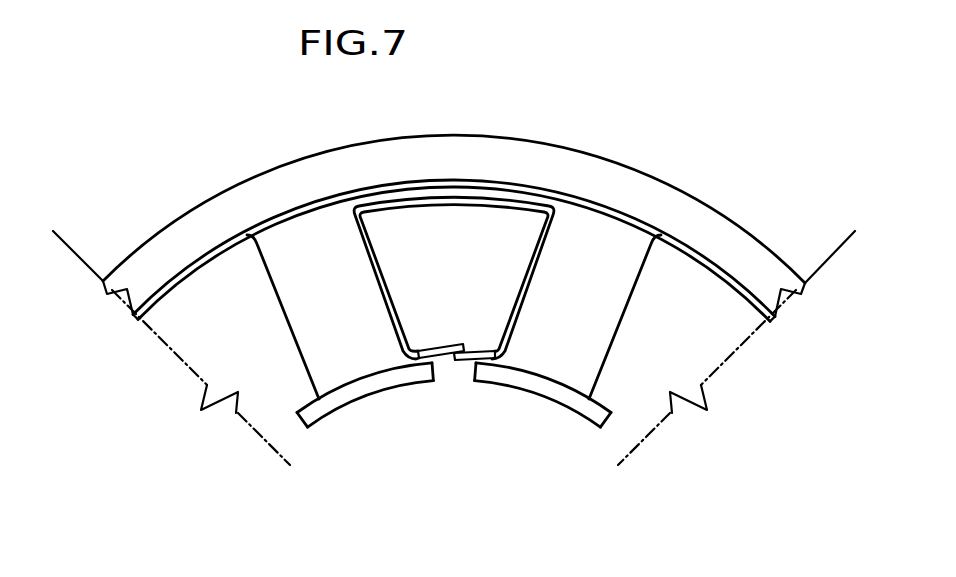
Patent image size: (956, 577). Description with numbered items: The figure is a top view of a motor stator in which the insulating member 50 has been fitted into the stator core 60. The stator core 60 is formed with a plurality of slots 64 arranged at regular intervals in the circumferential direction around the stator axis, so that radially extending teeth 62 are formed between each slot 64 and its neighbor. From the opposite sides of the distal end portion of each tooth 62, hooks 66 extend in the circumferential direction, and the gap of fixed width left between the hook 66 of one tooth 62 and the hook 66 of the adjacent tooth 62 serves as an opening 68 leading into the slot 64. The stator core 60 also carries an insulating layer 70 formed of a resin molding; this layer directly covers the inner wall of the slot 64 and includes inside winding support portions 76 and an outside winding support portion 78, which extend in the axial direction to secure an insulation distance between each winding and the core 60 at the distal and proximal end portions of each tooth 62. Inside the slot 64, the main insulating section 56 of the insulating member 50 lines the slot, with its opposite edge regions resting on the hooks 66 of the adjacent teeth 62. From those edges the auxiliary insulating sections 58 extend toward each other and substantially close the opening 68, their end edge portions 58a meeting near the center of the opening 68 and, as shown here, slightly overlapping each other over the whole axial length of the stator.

The insulating member 50 is at (462, 202).
The main insulating section 56 is at (375, 238).
The auxiliary insulating sections 58 is at (445, 340).
The end edge portions 58a is at (473, 345).
The stator core 60 is at (699, 201).
The teeth 62 is at (325, 320).
The slots 64 is at (201, 298).
The hooks 66 is at (312, 428).
The opening 68 is at (458, 376).
The insulating layer 70 is at (608, 198).
The inside winding support portions 76 is at (363, 397).
The outside winding support portion 78 is at (281, 216).